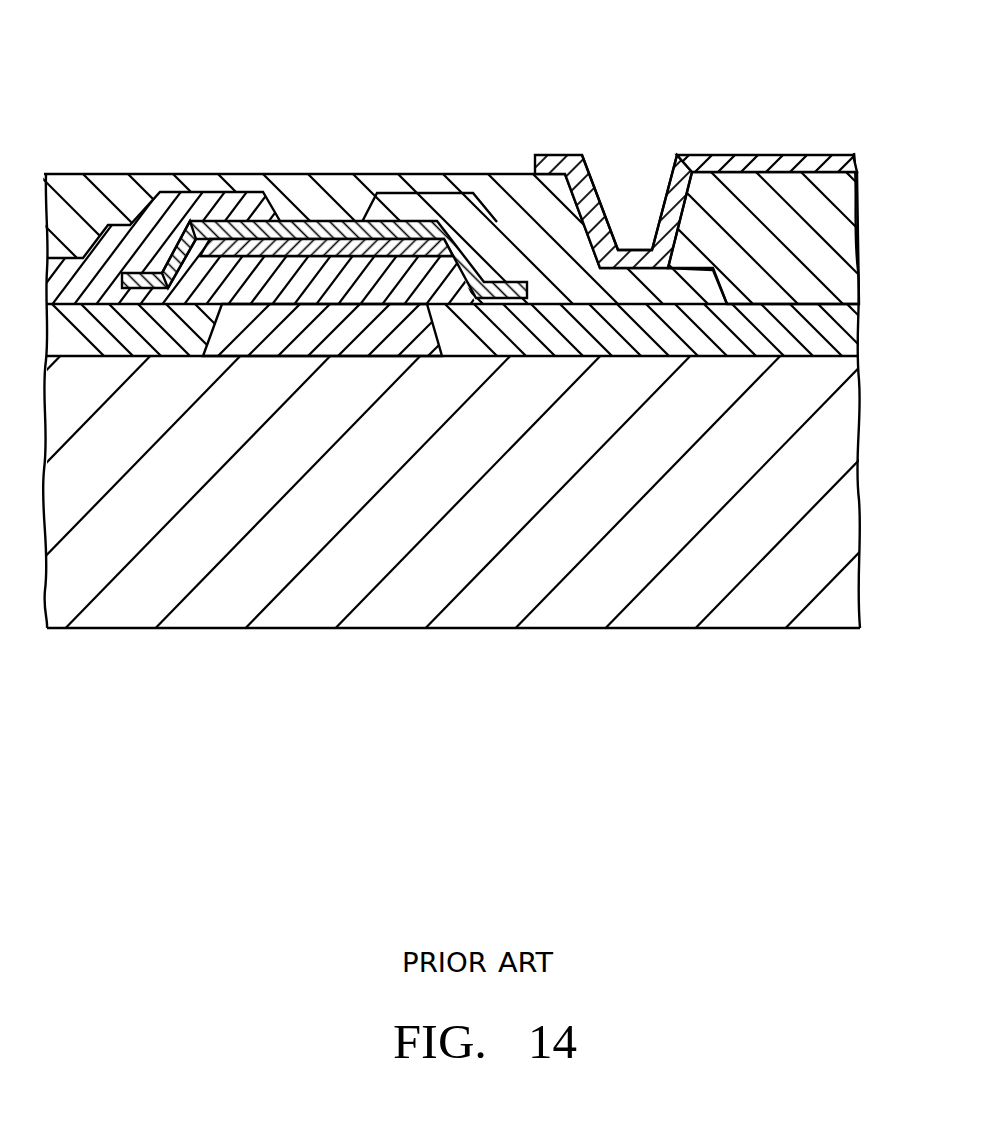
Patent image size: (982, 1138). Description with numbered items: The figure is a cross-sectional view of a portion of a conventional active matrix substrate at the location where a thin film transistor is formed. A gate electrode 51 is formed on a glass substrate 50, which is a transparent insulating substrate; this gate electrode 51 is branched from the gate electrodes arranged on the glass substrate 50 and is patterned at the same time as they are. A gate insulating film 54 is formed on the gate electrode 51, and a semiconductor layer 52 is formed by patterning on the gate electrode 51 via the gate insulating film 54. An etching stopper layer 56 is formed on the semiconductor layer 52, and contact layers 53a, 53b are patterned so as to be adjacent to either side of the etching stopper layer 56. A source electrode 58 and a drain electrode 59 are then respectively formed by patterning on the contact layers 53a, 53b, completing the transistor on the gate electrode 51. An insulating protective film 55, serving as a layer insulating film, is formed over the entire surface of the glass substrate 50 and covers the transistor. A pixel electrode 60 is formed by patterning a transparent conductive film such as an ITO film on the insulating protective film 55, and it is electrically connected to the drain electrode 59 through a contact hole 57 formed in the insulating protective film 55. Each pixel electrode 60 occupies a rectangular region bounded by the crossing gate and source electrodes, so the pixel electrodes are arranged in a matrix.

The glass substrate 50 is at (568, 612).
The gate electrode 51 is at (298, 340).
The semiconductor layer 52 is at (243, 247).
The contact layer 53a is at (168, 236).
The contact layer 53b is at (412, 221).
The gate insulating film 54 is at (832, 333).
The insulating protective film 55 is at (807, 197).
The etching stopper layer 56 is at (338, 233).
The contact hole 57 is at (641, 213).
The source electrode 58 is at (83, 268).
The drain electrode 59 is at (482, 207).
The pixel electrode 60 is at (700, 165).